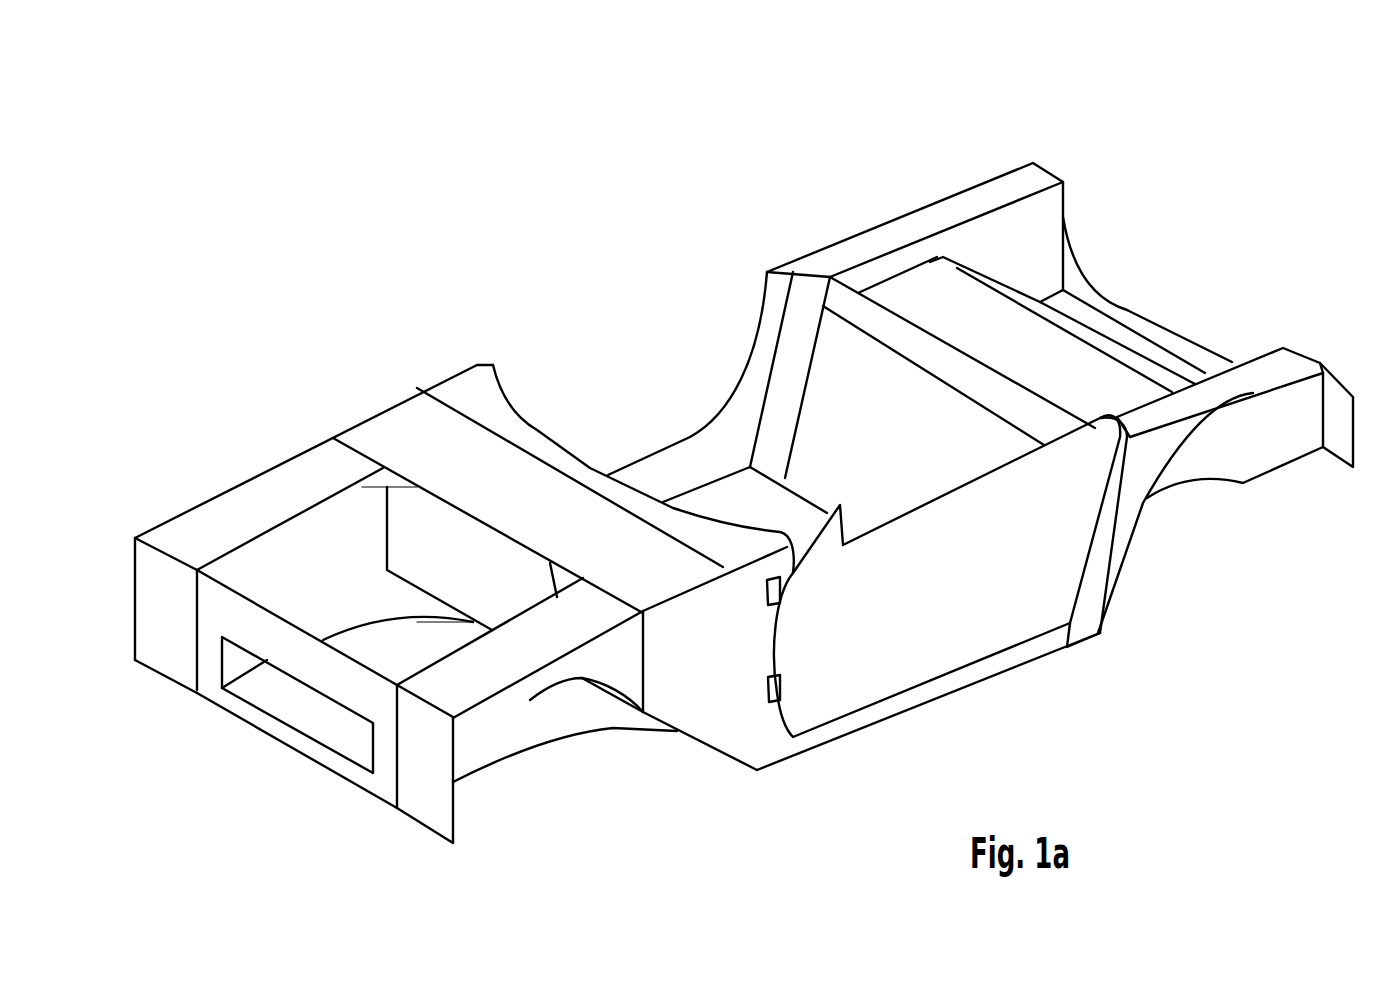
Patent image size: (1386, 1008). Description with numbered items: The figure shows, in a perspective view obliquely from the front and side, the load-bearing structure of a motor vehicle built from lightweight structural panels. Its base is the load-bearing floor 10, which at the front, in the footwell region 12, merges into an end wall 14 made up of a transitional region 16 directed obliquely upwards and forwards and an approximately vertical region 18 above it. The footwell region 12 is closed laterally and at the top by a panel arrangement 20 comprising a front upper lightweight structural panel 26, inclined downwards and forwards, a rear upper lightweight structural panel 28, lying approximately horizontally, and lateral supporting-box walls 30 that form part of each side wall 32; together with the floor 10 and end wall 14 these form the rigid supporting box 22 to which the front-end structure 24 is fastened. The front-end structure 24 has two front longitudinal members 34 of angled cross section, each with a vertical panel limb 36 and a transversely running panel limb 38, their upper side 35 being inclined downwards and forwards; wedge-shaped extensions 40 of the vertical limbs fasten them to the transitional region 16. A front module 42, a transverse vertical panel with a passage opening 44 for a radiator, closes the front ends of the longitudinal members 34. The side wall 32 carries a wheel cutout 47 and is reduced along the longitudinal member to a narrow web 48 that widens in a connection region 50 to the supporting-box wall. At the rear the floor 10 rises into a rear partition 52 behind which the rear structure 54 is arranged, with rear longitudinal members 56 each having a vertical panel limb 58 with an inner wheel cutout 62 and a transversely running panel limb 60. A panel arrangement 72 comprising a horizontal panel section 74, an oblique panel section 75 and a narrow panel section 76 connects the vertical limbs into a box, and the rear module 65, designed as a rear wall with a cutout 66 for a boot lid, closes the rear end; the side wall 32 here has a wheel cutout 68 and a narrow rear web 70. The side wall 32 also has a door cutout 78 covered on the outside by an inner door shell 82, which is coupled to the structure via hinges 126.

The floor 10 is at (718, 497).
The footwell region 12 is at (577, 413).
The end wall 14 is at (442, 579).
The transitional region 16 is at (688, 737).
The vertical region 18 is at (468, 573).
The panel arrangement 20 is at (415, 330).
The supporting box 22 is at (525, 421).
The front-end structure 24 is at (511, 788).
The front upper lightweight structural panel 26 is at (383, 410).
The rear upper lightweight structural panel 28 is at (477, 365).
The lateral supporting-box wall 30 is at (693, 647).
The side wall 32 is at (778, 758).
The front longitudinal member 34 is at (206, 490).
The upper side 35 is at (324, 471).
The vertical panel limb 36 is at (313, 573).
The transversely running panel limb 38 is at (266, 505).
The wedge-shaped extension 40 is at (612, 717).
The front module 42 is at (227, 720).
The passage opening 44 is at (307, 723).
The wheel cutout 47 is at (555, 763).
The narrow web 48 is at (476, 720).
The connection region 50 is at (614, 674).
The rear partition 52 is at (891, 432).
The rear structure 54 is at (1173, 282).
The rear longitudinal member 56 is at (938, 188).
The vertical panel limb 58 is at (1042, 225).
The transversely running panel limb 60 is at (1001, 183).
The inner wheel cutout 62 is at (1207, 482).
The rear module 65 is at (1220, 358).
The cutout 66 is at (1170, 307).
The wheel cutout 68 is at (1189, 508).
The rear web 70 is at (1247, 400).
The panel arrangement 72 is at (910, 303).
The horizontal panel section 74 is at (996, 357).
The oblique panel section 75 is at (1100, 347).
The narrow panel section 76 is at (1213, 360).
The door cutout 78 is at (718, 356).
The inner door shell 82 is at (941, 597).
The hinge 126 is at (765, 690).